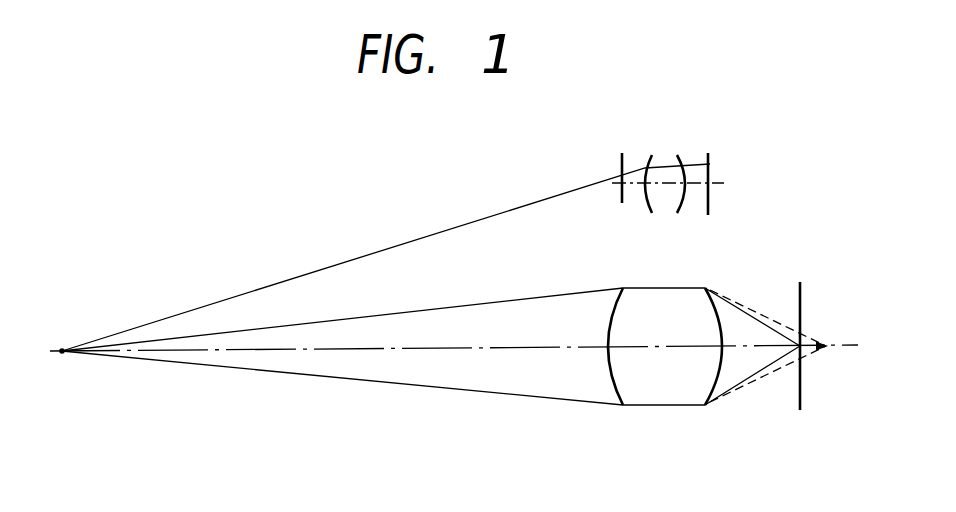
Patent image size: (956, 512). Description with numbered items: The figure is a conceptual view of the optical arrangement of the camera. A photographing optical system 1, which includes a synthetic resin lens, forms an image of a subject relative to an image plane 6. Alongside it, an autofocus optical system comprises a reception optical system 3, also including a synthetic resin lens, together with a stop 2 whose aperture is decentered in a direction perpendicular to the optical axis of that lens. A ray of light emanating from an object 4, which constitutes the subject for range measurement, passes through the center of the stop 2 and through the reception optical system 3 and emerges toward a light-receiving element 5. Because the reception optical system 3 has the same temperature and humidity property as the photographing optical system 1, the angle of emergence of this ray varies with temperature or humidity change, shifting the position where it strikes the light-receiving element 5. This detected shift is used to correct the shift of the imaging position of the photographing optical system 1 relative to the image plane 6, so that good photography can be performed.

The photographing optical system 1 is at (727, 422).
The stop 2 is at (619, 160).
The reception optical system 3 is at (690, 227).
The object 4 is at (62, 349).
The light-receiving element 5 is at (712, 167).
The image plane 6 is at (803, 300).